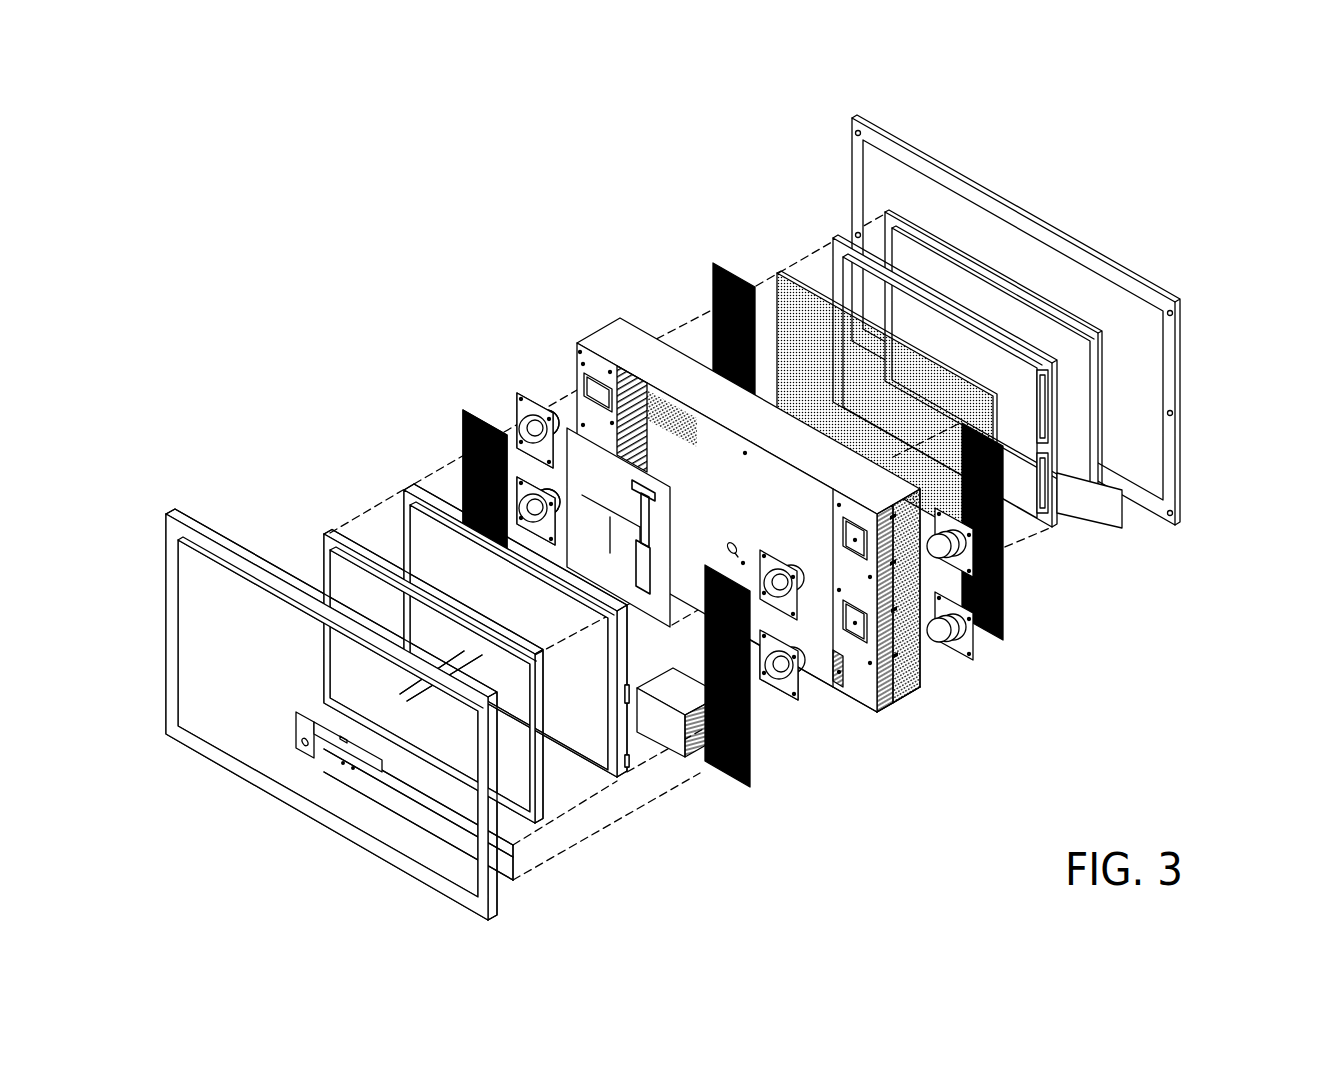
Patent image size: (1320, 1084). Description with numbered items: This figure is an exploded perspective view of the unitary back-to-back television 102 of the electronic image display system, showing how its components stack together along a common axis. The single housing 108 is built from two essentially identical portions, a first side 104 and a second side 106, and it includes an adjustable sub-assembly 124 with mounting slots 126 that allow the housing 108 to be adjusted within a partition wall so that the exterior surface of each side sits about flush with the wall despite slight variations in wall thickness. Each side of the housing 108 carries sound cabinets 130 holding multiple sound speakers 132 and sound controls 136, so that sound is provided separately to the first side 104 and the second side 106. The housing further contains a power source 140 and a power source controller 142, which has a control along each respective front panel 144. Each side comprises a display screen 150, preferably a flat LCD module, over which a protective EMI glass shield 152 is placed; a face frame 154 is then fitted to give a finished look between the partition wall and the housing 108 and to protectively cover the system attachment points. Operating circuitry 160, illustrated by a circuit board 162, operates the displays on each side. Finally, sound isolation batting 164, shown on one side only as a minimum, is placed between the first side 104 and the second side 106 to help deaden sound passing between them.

The unitary back-to-back television 102 is at (590, 301).
The first side 104 is at (577, 377).
The second side 106 is at (643, 320).
The housing 108 is at (925, 705).
The adjustable sub-assembly 124 is at (923, 665).
The mounting slots 126 is at (882, 708).
The sound cabinets 130 is at (863, 653).
The sound speakers 132 is at (980, 653).
The sound controls 136 is at (361, 748).
The power source 140 is at (686, 757).
The power source controller 142 is at (298, 716).
The front panel 144 is at (1123, 517).
The display screen 150 is at (1060, 520).
The protective EMI glass shield 152 is at (1102, 447).
The face frame 154 is at (1177, 335).
The operating circuitry 160 is at (700, 533).
The circuit board 162 is at (663, 507).
The sound isolation batting 164 is at (735, 273).